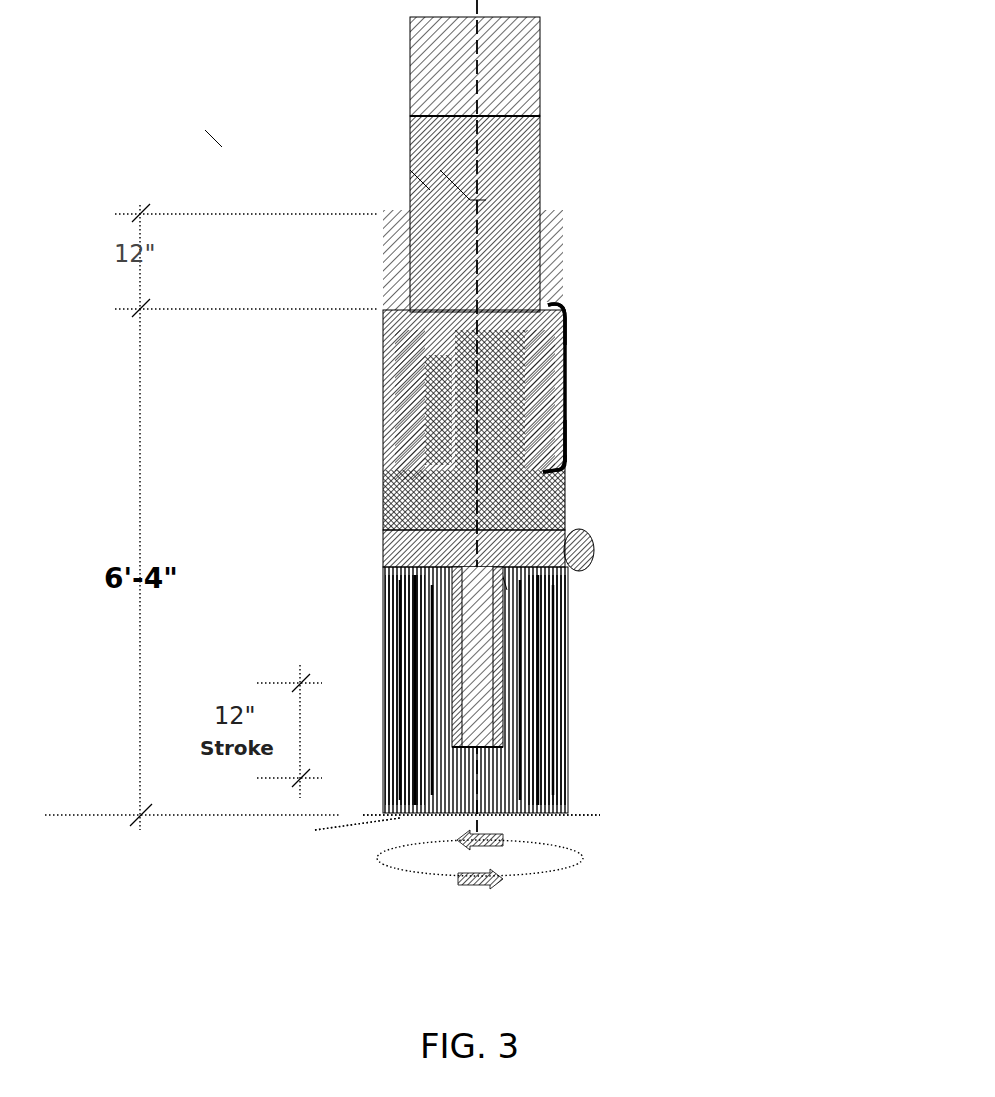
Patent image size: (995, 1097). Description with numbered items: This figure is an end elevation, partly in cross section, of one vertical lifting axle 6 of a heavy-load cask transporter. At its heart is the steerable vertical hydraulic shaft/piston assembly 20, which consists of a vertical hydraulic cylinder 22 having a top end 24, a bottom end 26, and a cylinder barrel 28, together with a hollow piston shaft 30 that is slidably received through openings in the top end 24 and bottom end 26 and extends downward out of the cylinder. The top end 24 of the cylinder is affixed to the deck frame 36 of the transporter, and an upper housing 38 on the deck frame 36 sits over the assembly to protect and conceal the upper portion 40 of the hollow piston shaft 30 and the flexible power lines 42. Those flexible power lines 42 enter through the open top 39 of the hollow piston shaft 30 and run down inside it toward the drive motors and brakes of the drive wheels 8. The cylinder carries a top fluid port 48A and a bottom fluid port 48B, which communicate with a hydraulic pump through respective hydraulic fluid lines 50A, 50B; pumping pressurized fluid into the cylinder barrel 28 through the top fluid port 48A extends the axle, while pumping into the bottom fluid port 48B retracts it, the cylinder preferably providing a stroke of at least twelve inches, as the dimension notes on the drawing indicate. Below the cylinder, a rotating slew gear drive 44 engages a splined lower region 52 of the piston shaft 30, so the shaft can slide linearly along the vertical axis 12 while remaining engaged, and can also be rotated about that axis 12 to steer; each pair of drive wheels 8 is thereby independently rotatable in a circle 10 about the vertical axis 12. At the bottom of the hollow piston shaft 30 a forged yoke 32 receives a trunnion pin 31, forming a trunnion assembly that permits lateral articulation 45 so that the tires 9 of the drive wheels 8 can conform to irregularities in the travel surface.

The vertical lifting axle 6 is at (220, 143).
The drive wheels 8 is at (372, 692).
The tires 9 is at (486, 690).
The circle 10 is at (520, 863).
The vertical axis 12 is at (501, 60).
The vertical hydraulic shaft/piston assembly 20 is at (539, 400).
The vertical hydraulic cylinder 22 is at (592, 388).
The top end 24 is at (501, 394).
The bottom end 26 is at (481, 496).
The cylinder barrel 28 is at (387, 405).
The hollow piston shaft 30 is at (548, 181).
The trunnion pin 31 is at (551, 759).
The forged yoke 32 is at (529, 657).
The deck frame 36 is at (442, 260).
The upper housing 38 is at (505, 98).
The open top 39 is at (404, 155).
The upper portion 40 is at (393, 172).
The flexible power lines 42 is at (499, 214).
The rotating slew gear drive 44 is at (504, 558).
The lateral articulation 45 is at (418, 877).
The top fluid port 48A is at (600, 302).
The bottom fluid port 48B is at (587, 478).
The hydraulic fluid line 50A is at (591, 326).
The hydraulic fluid line 50B is at (605, 441).
The lower region 52 is at (562, 594).